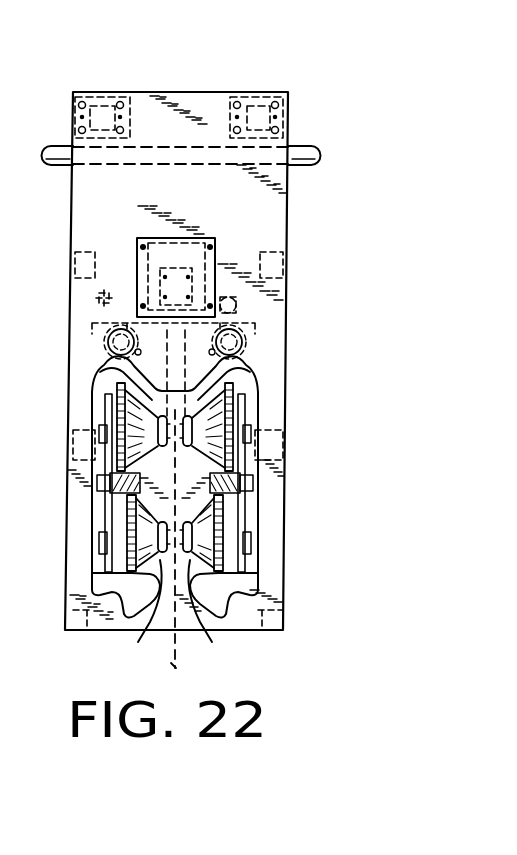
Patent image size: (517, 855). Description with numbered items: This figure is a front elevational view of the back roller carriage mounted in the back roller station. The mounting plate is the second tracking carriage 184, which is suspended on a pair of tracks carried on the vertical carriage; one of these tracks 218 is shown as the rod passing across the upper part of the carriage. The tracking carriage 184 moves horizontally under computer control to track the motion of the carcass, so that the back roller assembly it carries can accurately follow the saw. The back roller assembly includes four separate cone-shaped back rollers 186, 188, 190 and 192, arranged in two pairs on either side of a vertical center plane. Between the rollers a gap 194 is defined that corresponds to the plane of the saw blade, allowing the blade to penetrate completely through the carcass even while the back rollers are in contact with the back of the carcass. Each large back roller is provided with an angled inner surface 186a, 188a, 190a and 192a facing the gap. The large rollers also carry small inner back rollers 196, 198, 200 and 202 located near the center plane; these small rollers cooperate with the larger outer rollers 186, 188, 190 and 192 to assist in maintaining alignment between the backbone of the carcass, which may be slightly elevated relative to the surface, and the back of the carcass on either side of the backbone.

The second tracking carriage 184 is at (240, 88).
The track 218 is at (52, 150).
The angled inner surface 188a is at (100, 370).
The back roller 188 is at (121, 408).
The small inner back roller 196 is at (161, 431).
The small inner back roller 198 is at (160, 536).
The back roller 186 is at (92, 573).
The angled inner surface 186a is at (138, 642).
The gap 194 is at (173, 666).
The small inner back roller 202 is at (236, 373).
The back roller 190 is at (222, 412).
The angled inner surface 190a is at (197, 462).
The small inner back roller 200 is at (187, 535).
The back roller 192 is at (258, 573).
The angled inner surface 192a is at (212, 642).